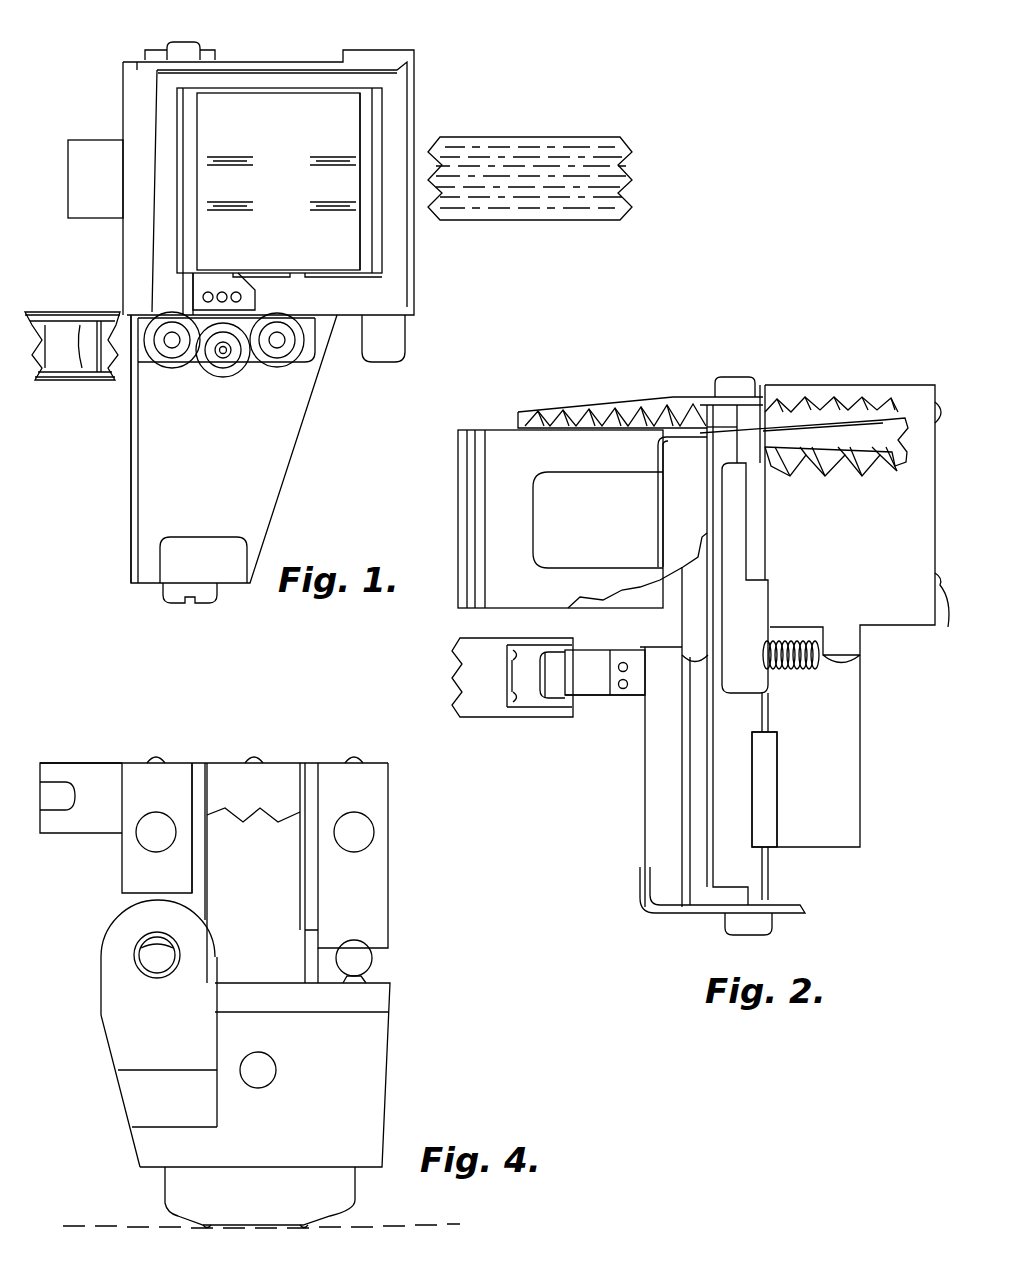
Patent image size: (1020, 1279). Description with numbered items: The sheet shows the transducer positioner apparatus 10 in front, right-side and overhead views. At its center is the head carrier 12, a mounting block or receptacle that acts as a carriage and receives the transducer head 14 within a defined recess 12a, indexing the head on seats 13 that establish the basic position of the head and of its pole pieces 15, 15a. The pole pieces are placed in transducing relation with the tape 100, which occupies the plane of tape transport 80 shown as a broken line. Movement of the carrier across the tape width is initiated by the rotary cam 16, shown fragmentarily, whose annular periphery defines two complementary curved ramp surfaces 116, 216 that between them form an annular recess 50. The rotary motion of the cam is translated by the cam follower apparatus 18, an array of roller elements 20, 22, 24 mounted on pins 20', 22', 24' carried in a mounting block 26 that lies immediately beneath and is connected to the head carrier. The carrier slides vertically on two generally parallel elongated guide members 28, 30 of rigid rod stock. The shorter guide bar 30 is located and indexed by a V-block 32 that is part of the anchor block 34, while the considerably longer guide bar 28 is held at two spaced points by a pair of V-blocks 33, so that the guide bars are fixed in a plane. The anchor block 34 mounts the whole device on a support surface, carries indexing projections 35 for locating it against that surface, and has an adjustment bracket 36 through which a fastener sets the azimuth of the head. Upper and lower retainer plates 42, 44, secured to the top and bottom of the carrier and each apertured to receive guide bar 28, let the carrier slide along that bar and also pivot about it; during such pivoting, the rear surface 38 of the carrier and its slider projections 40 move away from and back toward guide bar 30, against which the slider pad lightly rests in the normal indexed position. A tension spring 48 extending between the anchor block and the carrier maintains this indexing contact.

In FIG. 1, the positioner apparatus 10 is at (405, 48).
In FIG. 1, the head carrier 12 is at (420, 305).
In FIG. 2, the head carrier 12 is at (635, 405).
In FIG. 4, the head carrier 12 is at (347, 1094).
In FIG. 1, the recess 12a is at (382, 262).
In FIG. 1, the seats 13 is at (240, 270).
In FIG. 1, the transducer head 14 is at (285, 132).
In FIG. 2, the transducer head 14 is at (519, 464).
In FIG. 4, the transducer head 14 is at (265, 1201).
In FIG. 1, the pole piece 15 is at (222, 155).
In FIG. 1, the pole piece 15a is at (225, 210).
In FIG. 1, the rotary cam 16 is at (94, 304).
In FIG. 2, the rotary cam 16 is at (450, 680).
In FIG. 1, the cam follower apparatus 18 is at (312, 348).
In FIG. 1, the roller element 20 is at (171, 358).
In FIG. 1, the pin 20' is at (176, 379).
In FIG. 1, the roller element 22 is at (222, 363).
In FIG. 2, the roller element 22 is at (605, 717).
In FIG. 1, the pin 22' is at (225, 384).
In FIG. 1, the roller element 24 is at (277, 358).
In FIG. 2, the roller element 24 is at (552, 707).
In FIG. 1, the pin 24' is at (284, 379).
In FIG. 1, the mounting block 26 is at (135, 378).
In FIG. 2, the mounting block 26 is at (598, 682).
In FIG. 1, the guide member 28 is at (165, 50).
In FIG. 2, the guide member 28 is at (737, 378).
In FIG. 4, the guide member 28 is at (166, 965).
In FIG. 1, the guide member 30 is at (395, 348).
In FIG. 4, the guide member 30 is at (364, 966).
In FIG. 2, the V-block 32 is at (770, 532).
In FIG. 4, the V-block 32 is at (360, 892).
In FIG. 2, the V-blocks 33 is at (776, 790).
In FIG. 2, the anchor block 34 is at (856, 554).
In FIG. 2, the indexing projections 35 is at (938, 400).
In FIG. 4, the indexing projections 35 is at (158, 758).
In FIG. 1, the adjustment bracket 36 is at (102, 192).
In FIG. 4, the adjustment bracket 36 is at (104, 807).
In FIG. 4, the rear surface 38 is at (322, 983).
In FIG. 4, the slider projections 40 is at (370, 980).
In FIG. 1, the upper retainer plate 42 is at (222, 62).
In FIG. 2, the upper retainer plate 42 is at (750, 405).
In FIG. 4, the upper retainer plate 42 is at (165, 1042).
In FIG. 2, the lower retainer plate 44 is at (790, 908).
In FIG. 2, the tension spring 48 is at (792, 672).
In FIG. 1, the annular recess 50 is at (72, 347).
In FIG. 2, the annular recess 50 is at (520, 665).
In FIG. 4, the plane of tape transport 80 is at (398, 1224).
In FIG. 1, the tape 100 is at (547, 113).
In FIG. 1, the ramp surface 116 is at (82, 358).
In FIG. 2, the ramp surface 116 is at (520, 692).
In FIG. 1, the ramp surface 216 is at (100, 362).
In FIG. 2, the ramp surface 216 is at (520, 648).